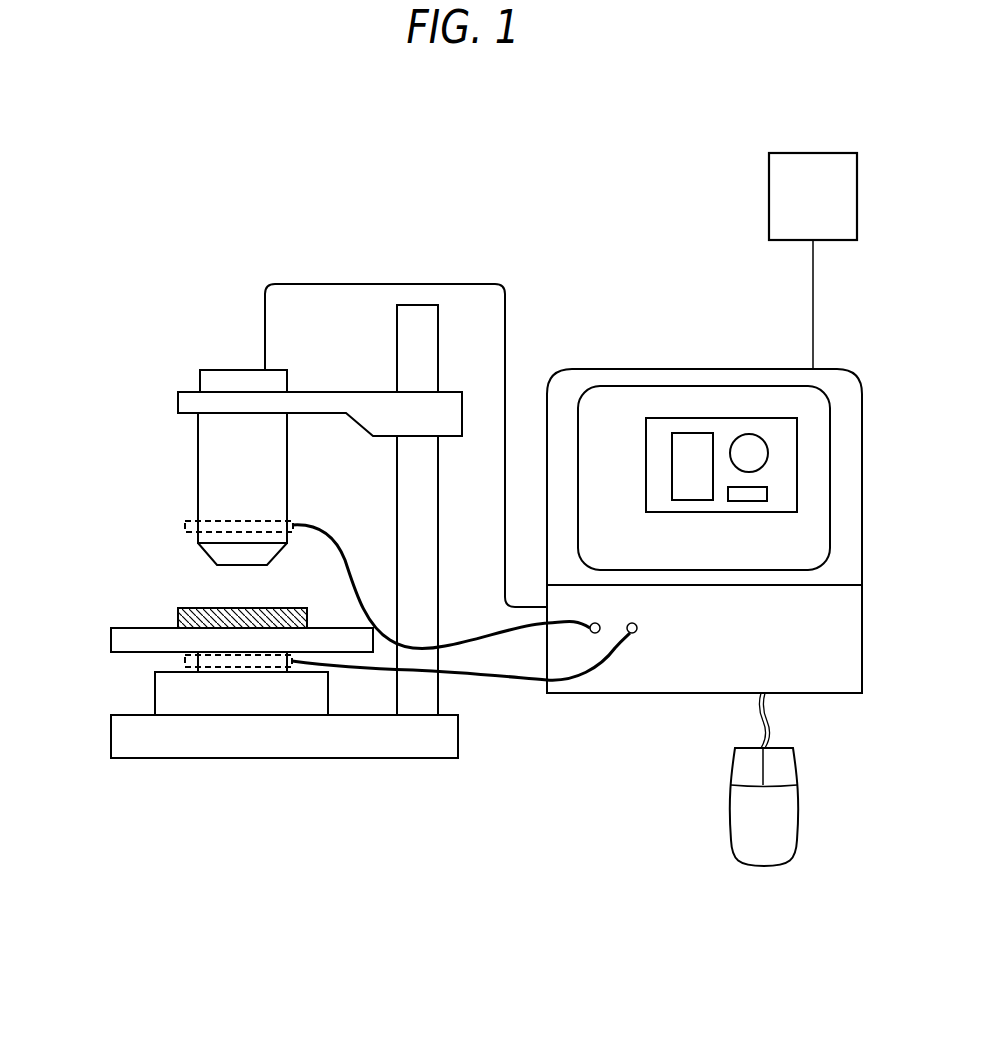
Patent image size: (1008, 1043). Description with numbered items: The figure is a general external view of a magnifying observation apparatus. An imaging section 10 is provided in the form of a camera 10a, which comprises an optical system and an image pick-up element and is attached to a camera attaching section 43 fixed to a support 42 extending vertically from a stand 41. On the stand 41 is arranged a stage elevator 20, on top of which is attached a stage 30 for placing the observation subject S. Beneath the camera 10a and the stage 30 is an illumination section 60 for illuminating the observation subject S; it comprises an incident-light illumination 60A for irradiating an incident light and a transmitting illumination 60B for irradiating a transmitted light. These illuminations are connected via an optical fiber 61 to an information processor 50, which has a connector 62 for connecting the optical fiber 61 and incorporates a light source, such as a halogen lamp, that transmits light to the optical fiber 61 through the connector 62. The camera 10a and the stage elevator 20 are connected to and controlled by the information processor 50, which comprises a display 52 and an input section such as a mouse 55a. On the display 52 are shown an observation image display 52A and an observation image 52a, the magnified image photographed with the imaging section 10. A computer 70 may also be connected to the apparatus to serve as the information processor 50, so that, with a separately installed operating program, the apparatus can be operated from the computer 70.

The imaging section 10 is at (220, 345).
The camera 10a is at (198, 462).
The camera attaching section 43 is at (347, 392).
The support 42 is at (398, 482).
The stand 41 is at (111, 737).
The stage elevator 20 is at (155, 697).
The stage 30 is at (111, 638).
The observation subject S is at (178, 615).
The illumination section 60 is at (162, 583).
The incident-light illumination 60A is at (185, 525).
The transmitting illumination 60B is at (185, 665).
The optical fiber 61 is at (500, 676).
The connector 62 is at (632, 633).
The information processor 50 is at (670, 369).
The display 52 is at (732, 419).
The observation image display 52A is at (740, 397).
The observation image 52a is at (797, 465).
The computer 70 is at (769, 198).
The mouse 55a is at (793, 823).